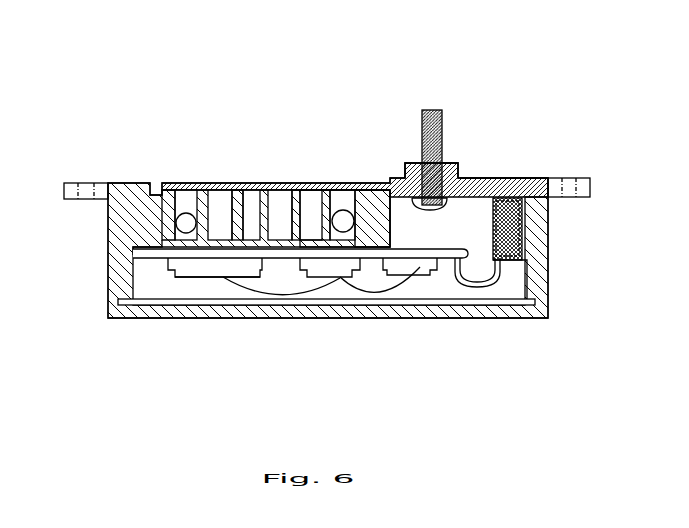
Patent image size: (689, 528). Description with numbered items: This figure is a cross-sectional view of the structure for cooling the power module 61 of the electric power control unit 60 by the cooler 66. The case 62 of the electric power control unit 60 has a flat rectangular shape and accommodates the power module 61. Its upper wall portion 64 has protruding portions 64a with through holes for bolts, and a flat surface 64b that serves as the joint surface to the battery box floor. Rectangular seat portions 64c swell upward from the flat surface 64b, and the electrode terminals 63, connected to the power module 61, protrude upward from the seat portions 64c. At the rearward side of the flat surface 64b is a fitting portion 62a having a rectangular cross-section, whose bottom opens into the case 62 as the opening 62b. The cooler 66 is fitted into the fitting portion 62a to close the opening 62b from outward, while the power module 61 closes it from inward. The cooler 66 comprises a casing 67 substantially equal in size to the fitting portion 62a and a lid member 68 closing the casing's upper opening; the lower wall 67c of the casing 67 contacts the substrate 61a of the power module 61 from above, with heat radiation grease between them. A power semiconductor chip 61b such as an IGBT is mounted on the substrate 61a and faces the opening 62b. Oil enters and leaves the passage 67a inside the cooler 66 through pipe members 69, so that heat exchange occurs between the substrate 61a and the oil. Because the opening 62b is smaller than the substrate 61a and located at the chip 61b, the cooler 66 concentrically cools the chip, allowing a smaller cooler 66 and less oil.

The electric power control unit 60 is at (134, 121).
The power module 61 is at (445, 262).
The substrate 61a is at (288, 287).
The power semiconductor chip 61b is at (197, 278).
The case 62 is at (127, 172).
The fitting portion 62a is at (182, 183).
The opening 62b is at (160, 229).
The electrode terminal 63 is at (447, 122).
The upper wall portion 64 is at (392, 175).
The protruding portion 64a is at (72, 183).
The flat surface 64b is at (499, 178).
The seat portion 64c is at (460, 170).
The cooler 66 is at (292, 121).
The casing 67 is at (368, 183).
The passage 67a is at (246, 183).
The lower wall 67c is at (273, 268).
The lid member 68 is at (313, 183).
The pipe member 69 is at (200, 183).